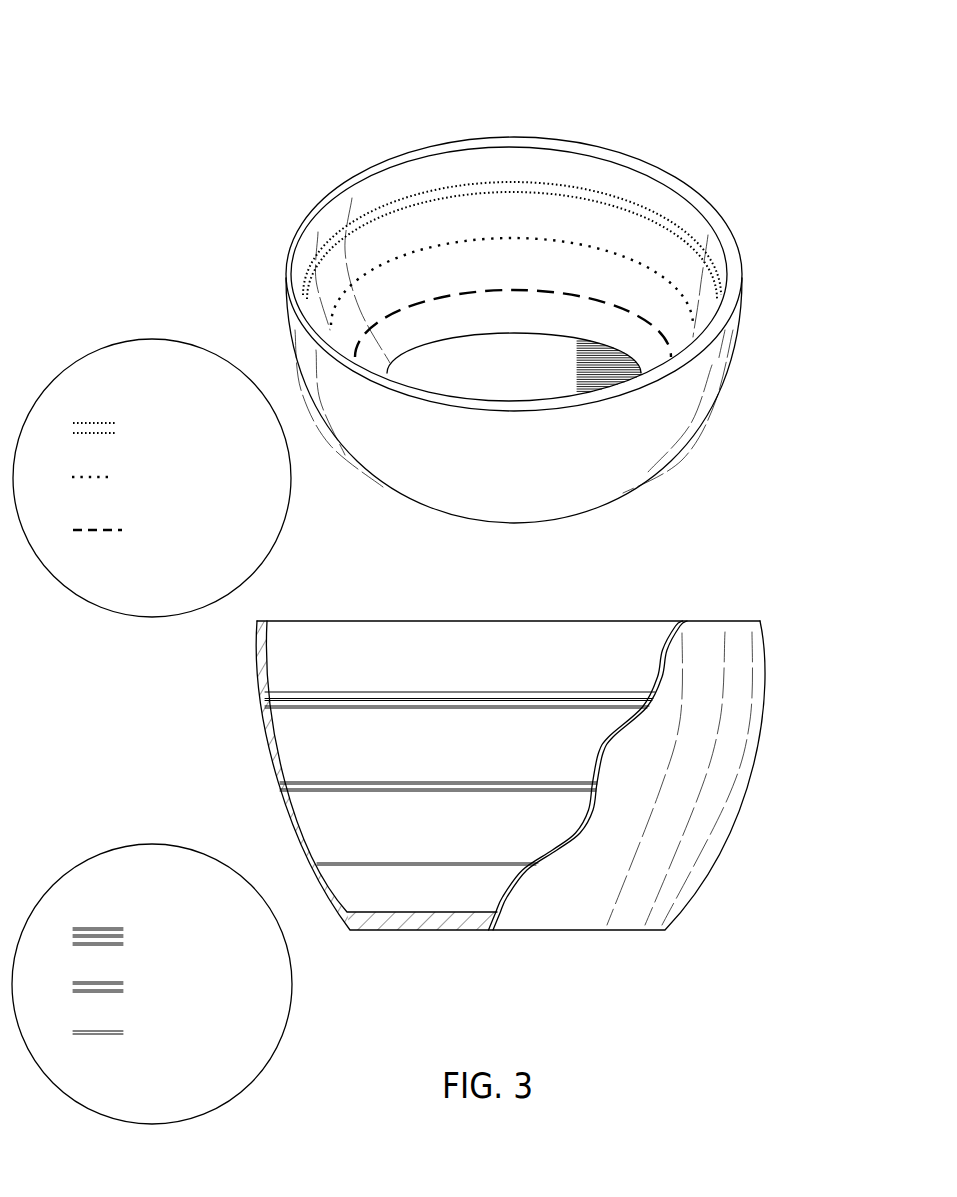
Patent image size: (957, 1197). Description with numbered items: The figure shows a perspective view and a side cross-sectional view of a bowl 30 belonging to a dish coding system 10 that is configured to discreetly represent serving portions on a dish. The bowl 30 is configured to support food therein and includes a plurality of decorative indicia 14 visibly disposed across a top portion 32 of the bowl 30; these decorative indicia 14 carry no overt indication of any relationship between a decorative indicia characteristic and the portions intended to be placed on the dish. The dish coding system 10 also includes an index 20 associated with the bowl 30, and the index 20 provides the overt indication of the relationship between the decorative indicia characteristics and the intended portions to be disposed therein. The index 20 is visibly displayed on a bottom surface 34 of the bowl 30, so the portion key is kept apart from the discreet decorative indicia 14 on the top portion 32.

The dish coding system 10 is at (753, 97).
The decorative indicia 14 is at (487, 240).
The index 20 is at (244, 487).
The bowl 30 is at (743, 297).
The top portion 32 is at (535, 277).
The bottom surface 34 is at (160, 582).